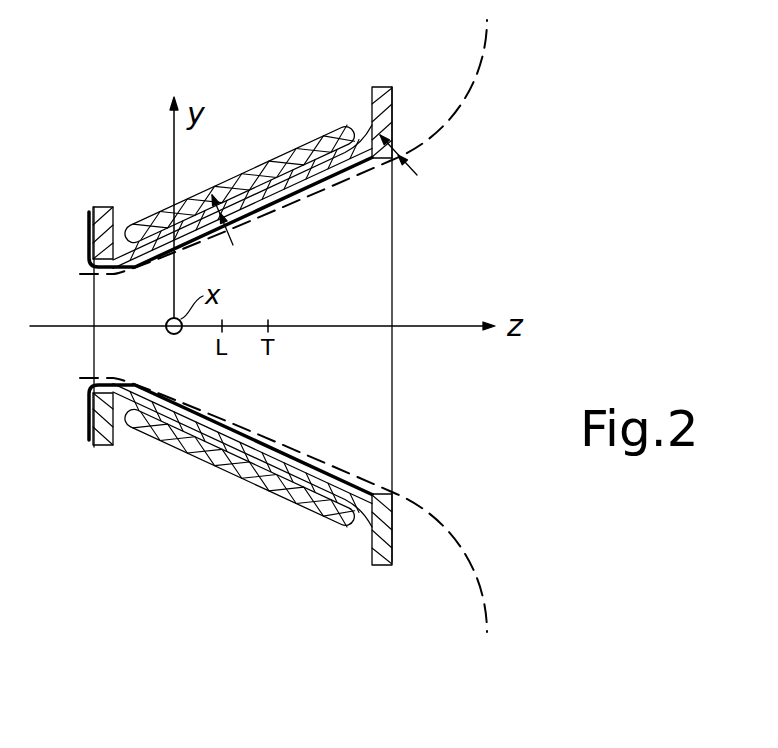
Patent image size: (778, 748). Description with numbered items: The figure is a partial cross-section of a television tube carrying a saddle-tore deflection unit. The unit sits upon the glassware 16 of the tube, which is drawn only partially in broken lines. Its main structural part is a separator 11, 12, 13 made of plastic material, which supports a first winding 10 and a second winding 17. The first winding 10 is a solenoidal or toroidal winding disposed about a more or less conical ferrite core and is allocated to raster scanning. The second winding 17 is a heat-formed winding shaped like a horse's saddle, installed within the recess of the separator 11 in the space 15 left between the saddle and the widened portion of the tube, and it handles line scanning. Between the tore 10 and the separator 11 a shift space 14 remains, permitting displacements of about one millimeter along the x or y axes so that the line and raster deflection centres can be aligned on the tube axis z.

The first winding 10 is at (293, 150).
The separator 11 is at (388, 100).
The separator 12 is at (88, 226).
The separator 13 is at (265, 198).
The shift space 14 is at (233, 245).
The space 15 is at (417, 175).
The glassware 16 is at (460, 546).
The second winding 17 is at (88, 254).